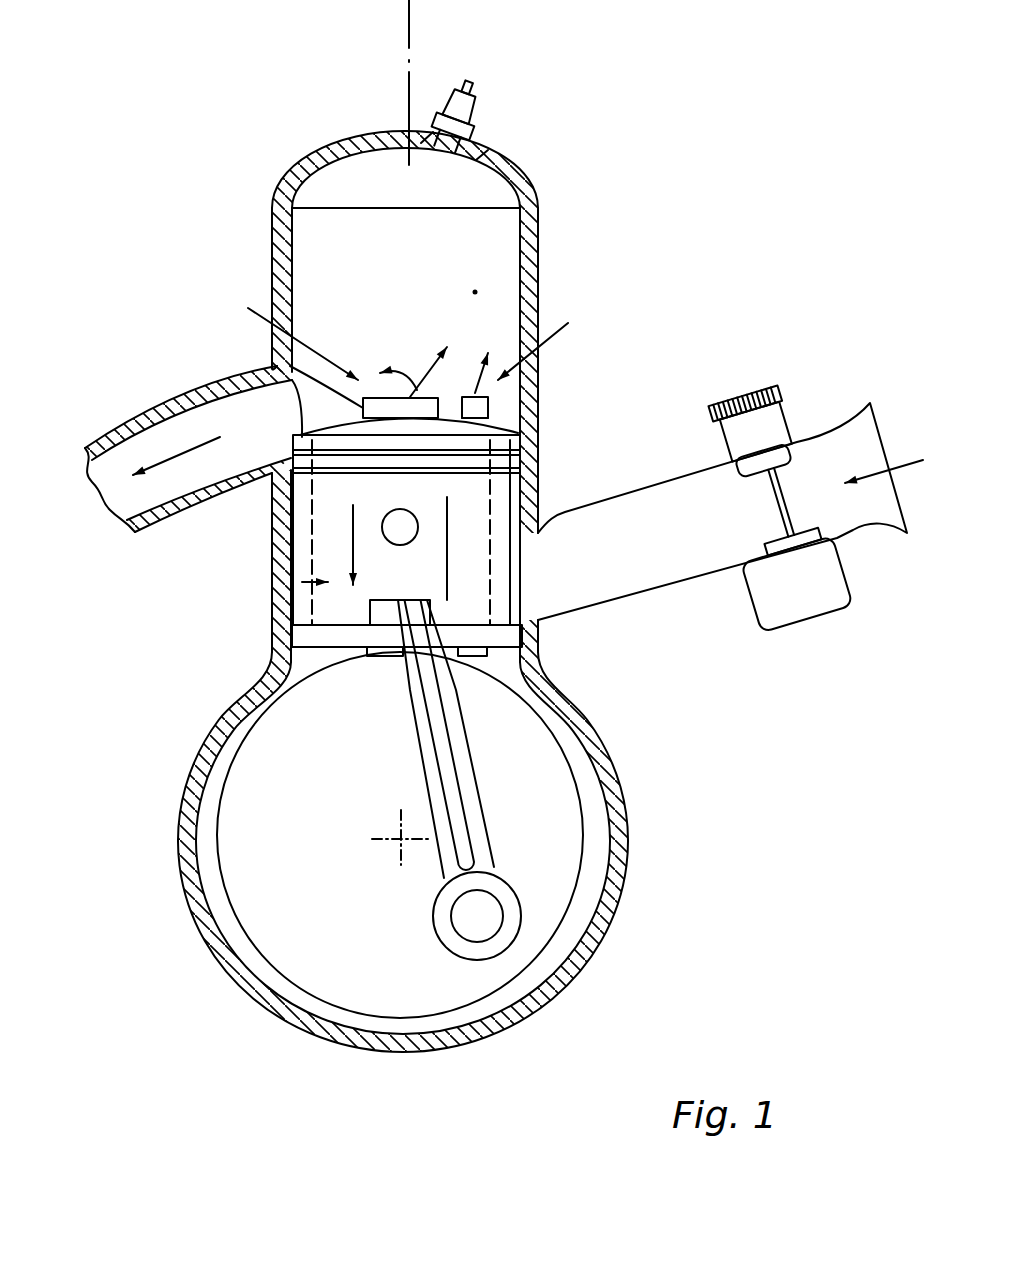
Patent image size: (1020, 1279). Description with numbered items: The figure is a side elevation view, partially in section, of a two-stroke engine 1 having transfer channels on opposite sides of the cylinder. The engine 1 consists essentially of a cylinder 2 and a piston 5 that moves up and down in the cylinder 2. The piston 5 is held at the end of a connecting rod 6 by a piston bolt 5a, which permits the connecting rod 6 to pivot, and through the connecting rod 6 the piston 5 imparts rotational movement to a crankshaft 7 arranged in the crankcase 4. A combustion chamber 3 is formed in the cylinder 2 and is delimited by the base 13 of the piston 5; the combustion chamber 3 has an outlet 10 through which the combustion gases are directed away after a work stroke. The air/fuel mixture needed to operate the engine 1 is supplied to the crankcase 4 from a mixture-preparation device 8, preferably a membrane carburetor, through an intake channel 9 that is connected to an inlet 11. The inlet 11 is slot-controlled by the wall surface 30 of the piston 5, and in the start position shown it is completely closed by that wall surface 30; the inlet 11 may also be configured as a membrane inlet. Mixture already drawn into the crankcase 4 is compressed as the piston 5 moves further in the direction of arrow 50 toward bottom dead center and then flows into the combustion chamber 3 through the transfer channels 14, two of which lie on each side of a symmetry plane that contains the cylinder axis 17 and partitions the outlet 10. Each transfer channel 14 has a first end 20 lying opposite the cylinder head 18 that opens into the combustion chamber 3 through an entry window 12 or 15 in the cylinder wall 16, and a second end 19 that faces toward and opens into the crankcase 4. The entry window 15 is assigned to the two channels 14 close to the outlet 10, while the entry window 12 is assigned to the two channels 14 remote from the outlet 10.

The two-stroke engine 1 is at (187, 295).
The cylinder 2 is at (283, 253).
The combustion chamber 3 is at (493, 252).
The crankcase 4 is at (582, 917).
The piston 5 is at (270, 588).
The piston bolt 5a is at (418, 523).
The connecting rod 6 is at (466, 782).
The crankshaft 7 is at (396, 840).
The mixture-preparation device 8 is at (800, 597).
The intake channel 9 is at (648, 567).
The outlet 10 is at (148, 490).
The inlet 11 is at (533, 577).
The entry window 12 is at (477, 410).
The base of the piston 13 is at (282, 395).
The transfer channels 14 is at (409, 344).
The entry window 15 is at (273, 358).
The cylinder wall 16 is at (475, 292).
The cylinder axis 17 is at (410, 22).
The cylinder head 18 is at (497, 167).
The second end 19 is at (472, 667).
The first end 20 is at (465, 390).
The wall surface 30 is at (268, 620).
The arrow 50 is at (365, 510).